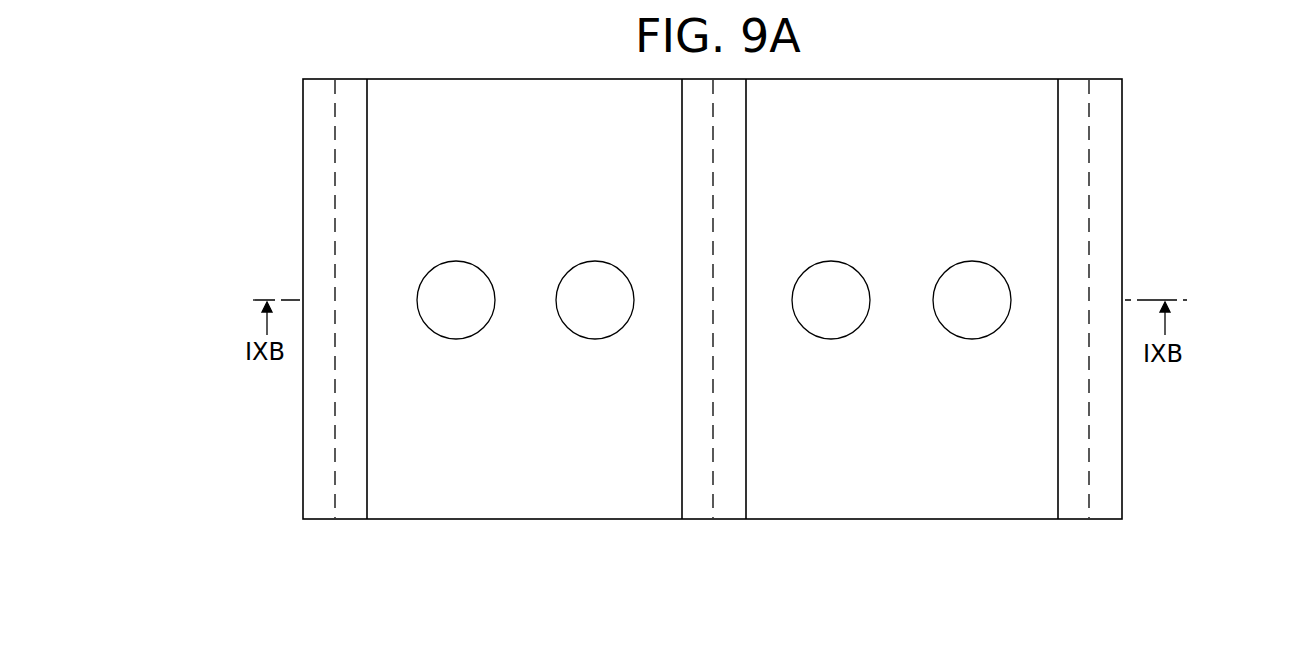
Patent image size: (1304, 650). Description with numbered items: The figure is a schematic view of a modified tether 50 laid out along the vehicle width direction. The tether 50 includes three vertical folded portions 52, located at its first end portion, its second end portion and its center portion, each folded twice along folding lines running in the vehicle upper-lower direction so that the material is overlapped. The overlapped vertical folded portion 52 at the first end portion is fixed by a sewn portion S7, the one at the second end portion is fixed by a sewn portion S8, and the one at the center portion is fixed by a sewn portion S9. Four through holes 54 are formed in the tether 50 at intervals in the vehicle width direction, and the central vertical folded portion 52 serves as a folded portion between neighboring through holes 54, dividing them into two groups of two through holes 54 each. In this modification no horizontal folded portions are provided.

The tether 50 is at (1123, 150).
The vertical folded portion 52 is at (315, 237).
The through hole 54 is at (558, 310).
The sewn portion S7 is at (333, 175).
The sewn portion S8 is at (1115, 205).
The sewn portion S9 is at (715, 470).